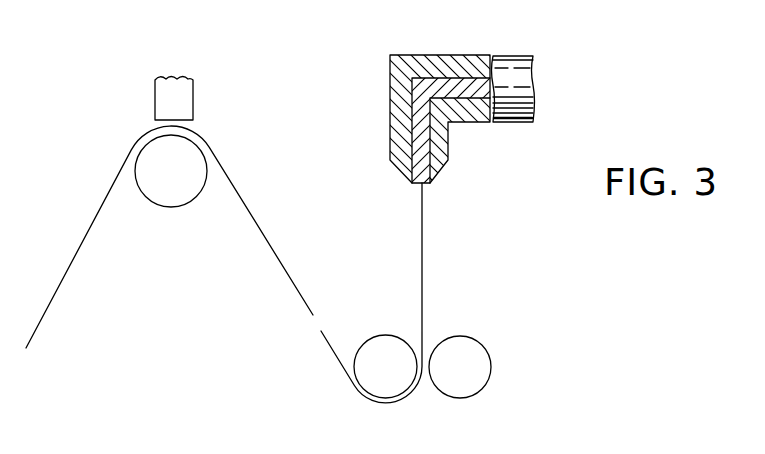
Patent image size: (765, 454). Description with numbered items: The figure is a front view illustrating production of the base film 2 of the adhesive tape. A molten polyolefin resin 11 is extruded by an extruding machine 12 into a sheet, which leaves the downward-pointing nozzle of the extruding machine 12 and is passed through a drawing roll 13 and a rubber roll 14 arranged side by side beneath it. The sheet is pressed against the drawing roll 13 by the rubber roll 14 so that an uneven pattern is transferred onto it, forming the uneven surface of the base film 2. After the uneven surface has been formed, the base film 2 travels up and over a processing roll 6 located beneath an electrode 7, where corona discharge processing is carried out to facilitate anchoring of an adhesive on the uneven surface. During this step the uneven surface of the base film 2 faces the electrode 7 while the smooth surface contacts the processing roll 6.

The base film 2 is at (62, 283).
The processing roll 6 is at (163, 190).
The electrode 7 is at (170, 100).
The molten polyolefin resin 11 is at (392, 105).
The extruding machine 12 is at (472, 55).
The drawing roll 13 is at (380, 345).
The rubber roll 14 is at (458, 343).